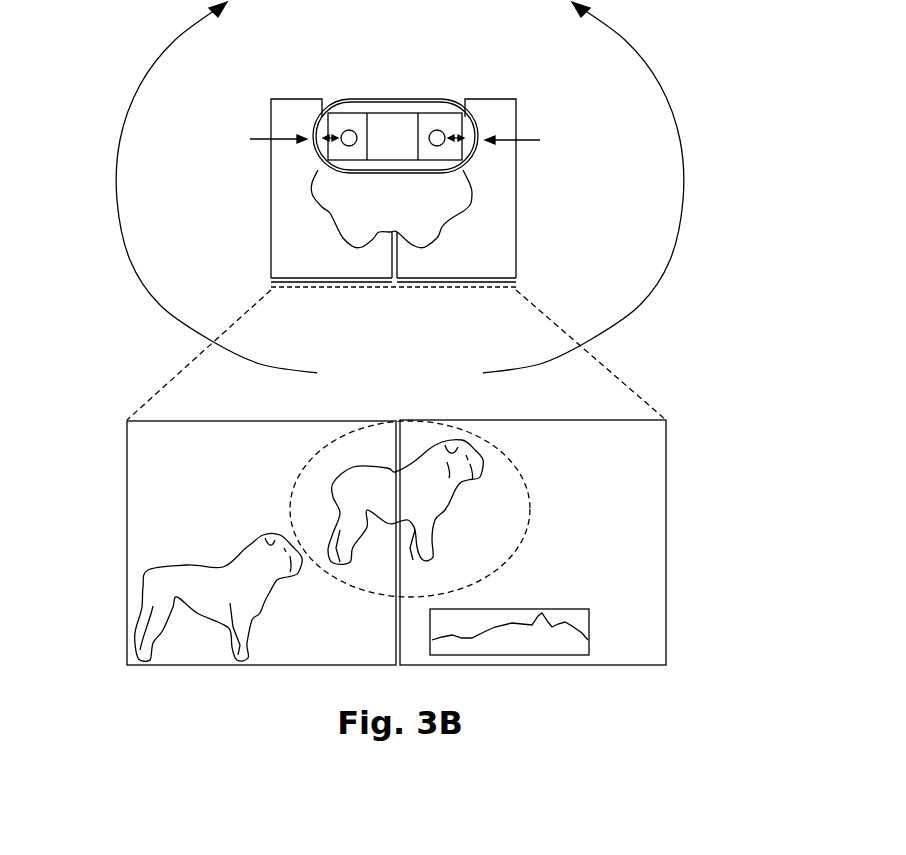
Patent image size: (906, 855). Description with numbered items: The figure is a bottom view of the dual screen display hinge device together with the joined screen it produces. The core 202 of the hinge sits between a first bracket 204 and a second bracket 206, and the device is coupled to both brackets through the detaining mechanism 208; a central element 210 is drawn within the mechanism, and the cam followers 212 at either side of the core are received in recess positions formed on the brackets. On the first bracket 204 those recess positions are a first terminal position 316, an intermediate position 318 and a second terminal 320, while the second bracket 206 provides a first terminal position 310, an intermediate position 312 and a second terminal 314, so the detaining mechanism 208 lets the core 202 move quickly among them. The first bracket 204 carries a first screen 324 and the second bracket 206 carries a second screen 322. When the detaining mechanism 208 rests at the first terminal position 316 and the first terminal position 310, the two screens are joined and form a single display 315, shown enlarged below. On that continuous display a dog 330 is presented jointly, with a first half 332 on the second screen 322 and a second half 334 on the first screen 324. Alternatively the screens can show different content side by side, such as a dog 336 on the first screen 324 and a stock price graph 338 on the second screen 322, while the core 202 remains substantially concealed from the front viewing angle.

The core 202 is at (370, 100).
The first bracket 204 is at (308, 269).
The second bracket 206 is at (436, 269).
The detaining mechanism 208 is at (422, 100).
The camera controller 210 is at (376, 150).
The cam followers 212 is at (335, 118).
The first terminal position 310 is at (540, 140).
The intermediate position 312 is at (467, 217).
The second terminal 314 is at (420, 250).
The single display 315 is at (516, 288).
The first terminal position 316 is at (250, 139).
The intermediate position 318 is at (322, 223).
The second terminal 320 is at (365, 250).
The second screen 322 is at (492, 290).
The first screen 324 is at (273, 287).
The dog 330 is at (300, 470).
The first half of the dog 332 is at (470, 455).
The second half of the dog 334 is at (368, 467).
The dog 336 is at (204, 572).
The stock price graph 338 is at (535, 608).